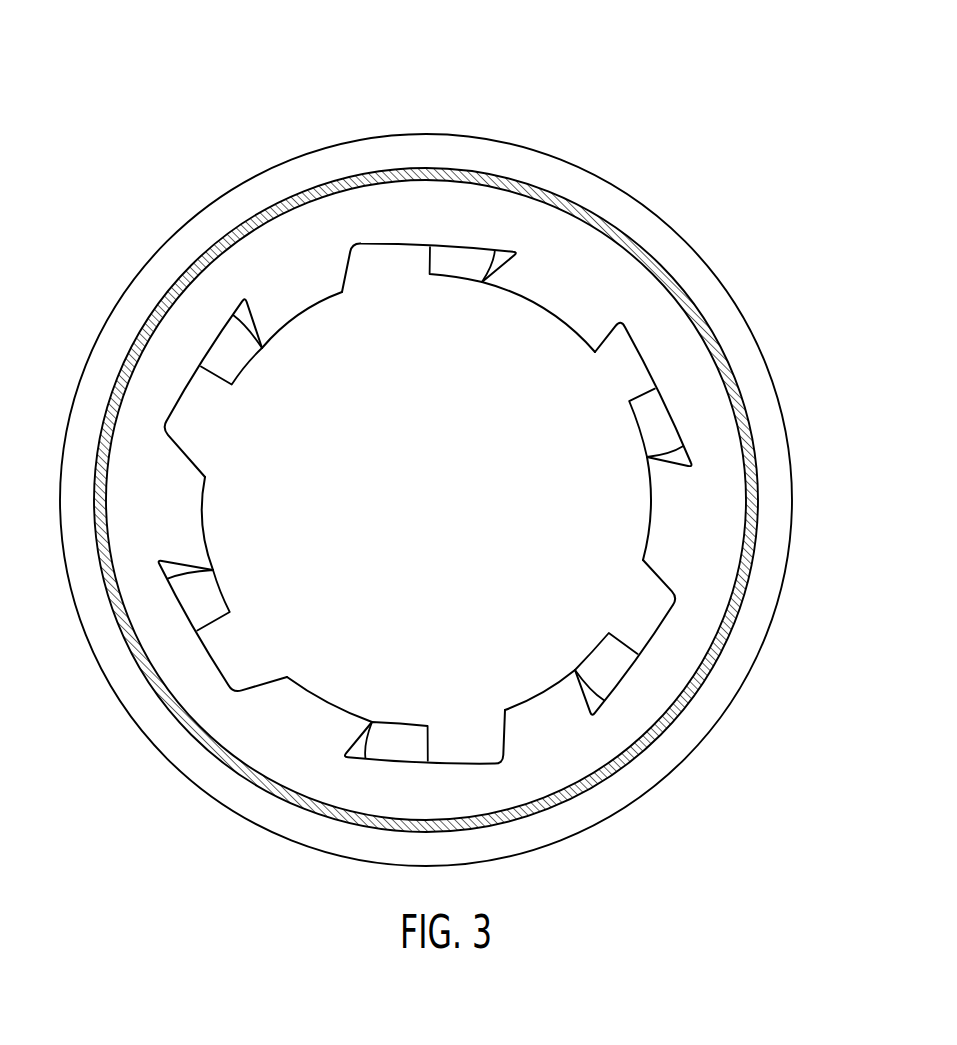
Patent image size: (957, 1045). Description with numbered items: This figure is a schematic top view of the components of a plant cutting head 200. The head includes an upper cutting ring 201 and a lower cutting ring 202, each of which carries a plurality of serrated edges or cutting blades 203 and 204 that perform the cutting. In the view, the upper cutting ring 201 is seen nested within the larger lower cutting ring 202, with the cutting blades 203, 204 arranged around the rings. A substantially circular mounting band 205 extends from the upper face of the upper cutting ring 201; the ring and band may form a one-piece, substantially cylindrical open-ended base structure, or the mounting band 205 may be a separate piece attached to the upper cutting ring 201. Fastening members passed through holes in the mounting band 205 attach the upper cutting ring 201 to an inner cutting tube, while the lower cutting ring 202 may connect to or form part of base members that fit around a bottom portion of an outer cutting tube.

The plant cutting head 200 is at (807, 92).
The upper cutting ring 201 is at (682, 537).
The lower cutting ring 202 is at (743, 678).
The cutting blades 203 is at (598, 300).
The cutting blades 204 is at (460, 253).
The mounting band 205 is at (757, 467).